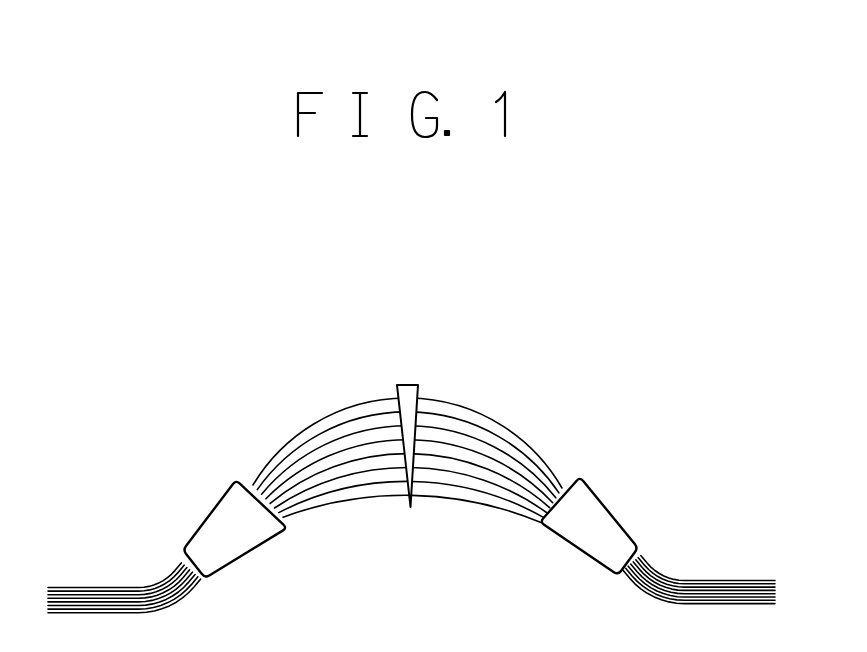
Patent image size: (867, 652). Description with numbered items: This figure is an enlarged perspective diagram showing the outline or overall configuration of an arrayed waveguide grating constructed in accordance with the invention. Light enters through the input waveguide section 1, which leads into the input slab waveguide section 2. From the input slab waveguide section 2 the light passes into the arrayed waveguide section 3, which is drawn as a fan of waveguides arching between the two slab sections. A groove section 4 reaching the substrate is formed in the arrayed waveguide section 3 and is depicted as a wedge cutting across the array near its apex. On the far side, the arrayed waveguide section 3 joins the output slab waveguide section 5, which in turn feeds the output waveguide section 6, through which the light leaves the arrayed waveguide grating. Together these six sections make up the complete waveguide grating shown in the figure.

The input waveguide section 1 is at (90, 589).
The input slab waveguide section 2 is at (216, 507).
The arrayed waveguide section 3 is at (364, 497).
The groove section 4 is at (407, 384).
The output slab waveguide section 5 is at (608, 494).
The output waveguide section 6 is at (740, 580).